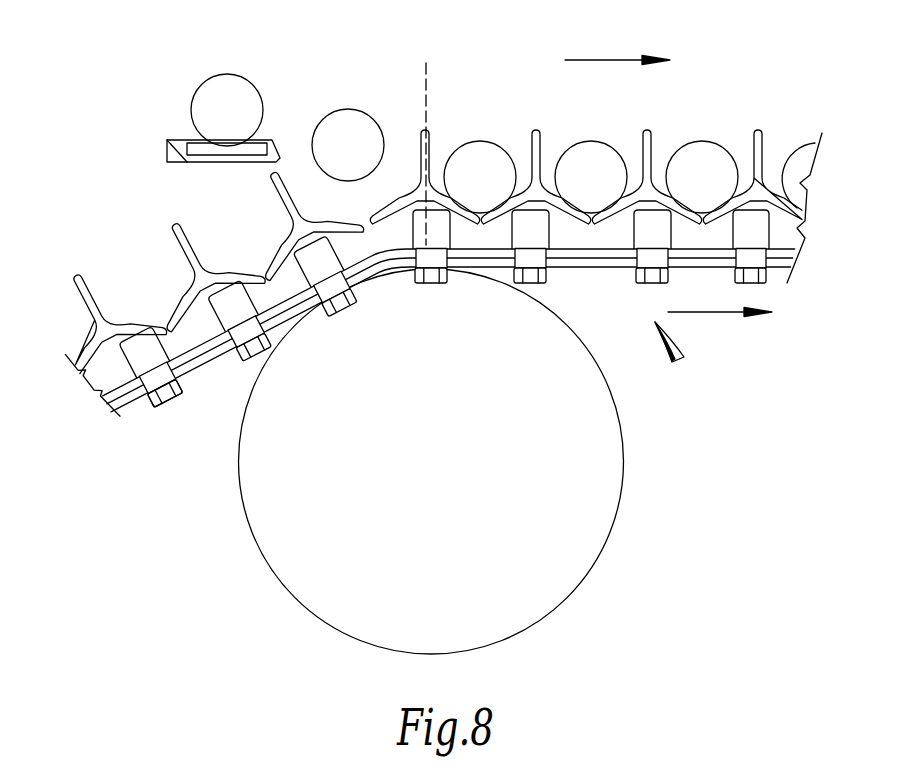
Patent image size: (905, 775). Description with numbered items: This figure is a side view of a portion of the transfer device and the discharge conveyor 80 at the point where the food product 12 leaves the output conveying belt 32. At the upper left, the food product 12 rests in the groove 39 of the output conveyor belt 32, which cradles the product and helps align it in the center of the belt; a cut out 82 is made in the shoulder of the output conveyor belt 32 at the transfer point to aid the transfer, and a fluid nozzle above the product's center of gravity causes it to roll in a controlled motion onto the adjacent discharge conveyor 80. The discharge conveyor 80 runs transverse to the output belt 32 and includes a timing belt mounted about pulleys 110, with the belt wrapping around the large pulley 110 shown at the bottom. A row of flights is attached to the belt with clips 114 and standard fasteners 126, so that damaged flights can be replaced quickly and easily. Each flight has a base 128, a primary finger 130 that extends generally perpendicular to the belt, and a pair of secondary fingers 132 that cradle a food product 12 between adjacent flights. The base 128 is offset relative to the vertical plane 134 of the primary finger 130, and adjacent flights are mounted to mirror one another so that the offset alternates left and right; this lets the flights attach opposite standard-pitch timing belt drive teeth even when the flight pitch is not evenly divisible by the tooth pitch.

The food product 12 is at (212, 82).
The cut out 82 is at (273, 147).
The groove 39 is at (218, 150).
The output conveying belt 32 is at (242, 163).
The vertical plane 134 is at (428, 64).
The primary finger 130 is at (193, 245).
The secondary fingers 132 is at (182, 303).
The base 128 is at (273, 340).
The fasteners 126 is at (252, 385).
The clips 114 is at (203, 363).
The pulleys 110 is at (627, 455).
The discharge conveyor 80 is at (684, 357).